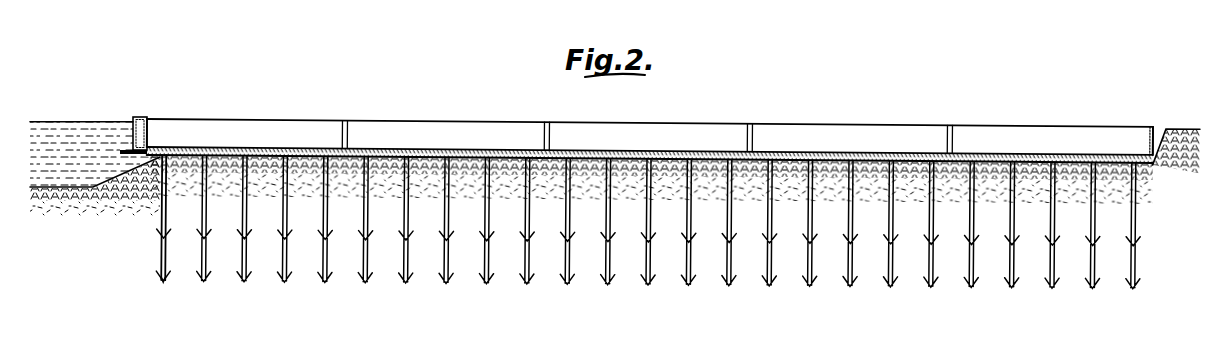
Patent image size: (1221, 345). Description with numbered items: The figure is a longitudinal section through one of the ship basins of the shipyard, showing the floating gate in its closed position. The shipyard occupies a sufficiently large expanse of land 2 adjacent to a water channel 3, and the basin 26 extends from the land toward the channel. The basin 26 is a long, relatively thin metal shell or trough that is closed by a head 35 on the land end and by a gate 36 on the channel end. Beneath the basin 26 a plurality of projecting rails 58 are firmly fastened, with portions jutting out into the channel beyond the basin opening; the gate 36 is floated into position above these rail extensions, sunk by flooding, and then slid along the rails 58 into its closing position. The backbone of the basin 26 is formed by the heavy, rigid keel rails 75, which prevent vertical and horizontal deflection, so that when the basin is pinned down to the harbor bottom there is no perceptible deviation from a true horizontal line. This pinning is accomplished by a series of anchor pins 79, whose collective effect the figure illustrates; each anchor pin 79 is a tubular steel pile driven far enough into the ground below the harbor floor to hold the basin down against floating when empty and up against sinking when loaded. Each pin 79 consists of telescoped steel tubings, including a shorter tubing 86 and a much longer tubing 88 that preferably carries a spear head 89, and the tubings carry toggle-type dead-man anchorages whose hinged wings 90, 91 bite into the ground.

The expanse of land 2 is at (1185, 129).
The water channel 3 is at (65, 122).
The basin 26 is at (250, 122).
The head 35 is at (1152, 130).
The gate 36 is at (146, 118).
The projecting rails 58 is at (116, 122).
The keel rails 75 is at (289, 146).
The anchor pin 79 is at (624, 228).
The steel tubing 86 is at (150, 193).
The steel tubing 88 is at (165, 248).
The spear head 89 is at (165, 278).
The wing 90 is at (162, 233).
The wing 91 is at (162, 270).